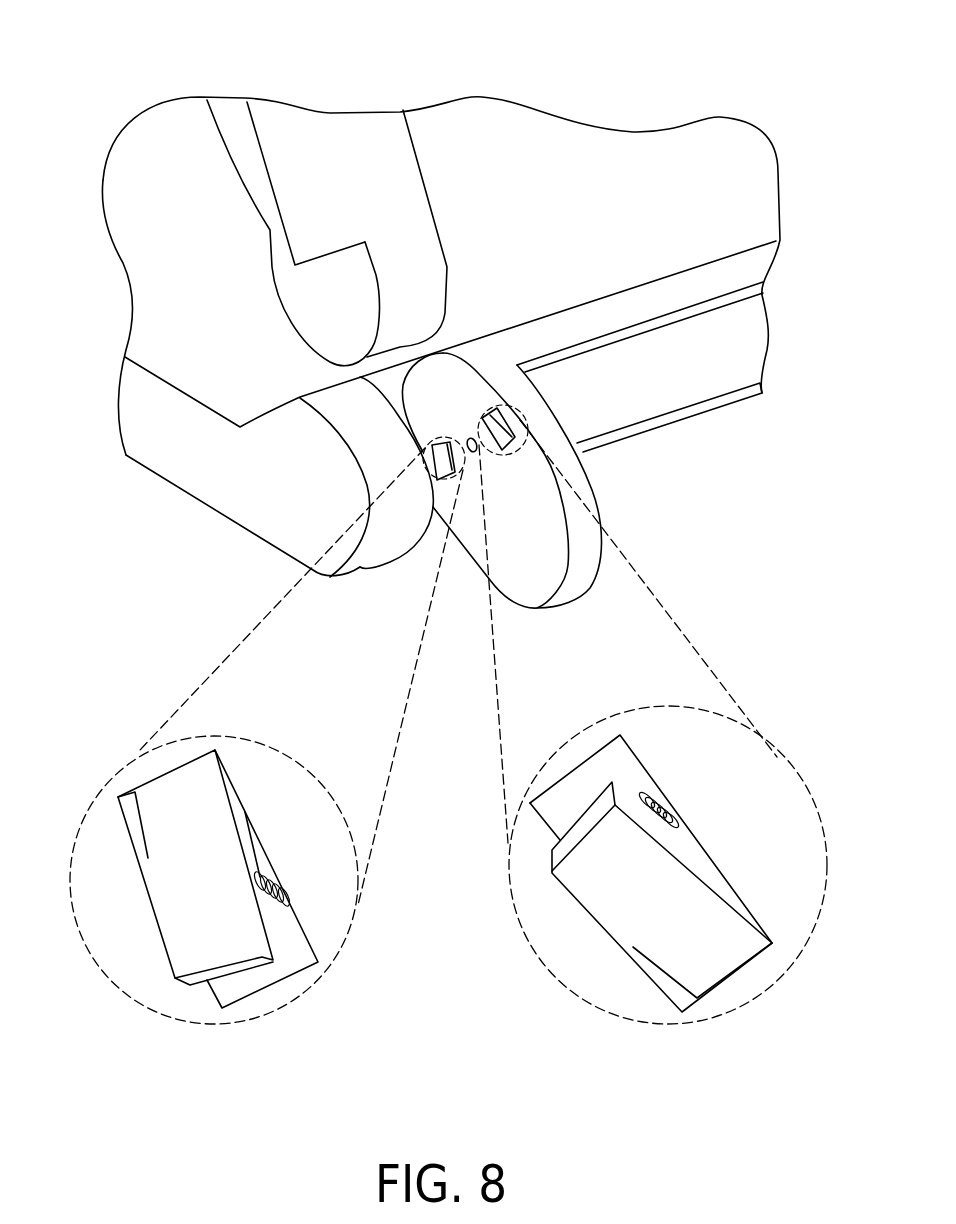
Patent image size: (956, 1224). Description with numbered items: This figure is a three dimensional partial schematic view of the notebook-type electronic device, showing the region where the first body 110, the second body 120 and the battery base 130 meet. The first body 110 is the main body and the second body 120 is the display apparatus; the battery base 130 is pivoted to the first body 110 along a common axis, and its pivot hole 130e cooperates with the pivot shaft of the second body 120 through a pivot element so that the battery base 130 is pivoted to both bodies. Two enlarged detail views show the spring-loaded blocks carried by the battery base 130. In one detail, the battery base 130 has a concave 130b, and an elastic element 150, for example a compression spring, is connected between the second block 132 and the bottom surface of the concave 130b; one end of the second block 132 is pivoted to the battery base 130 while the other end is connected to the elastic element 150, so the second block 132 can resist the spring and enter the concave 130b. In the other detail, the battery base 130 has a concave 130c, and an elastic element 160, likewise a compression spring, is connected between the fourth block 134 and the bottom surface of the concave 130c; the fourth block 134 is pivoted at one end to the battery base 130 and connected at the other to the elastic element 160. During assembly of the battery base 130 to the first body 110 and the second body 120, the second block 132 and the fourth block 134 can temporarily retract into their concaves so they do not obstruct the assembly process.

The first body 110 is at (238, 502).
The second body 120 is at (357, 180).
The battery base 130 is at (455, 390).
The pivot hole 130e is at (473, 433).
The concave 130c is at (128, 815).
The concave 130b is at (637, 762).
The fourth block 134 is at (178, 920).
The elastic element 160 is at (280, 907).
The elastic element 150 is at (673, 822).
The second block 132 is at (618, 902).